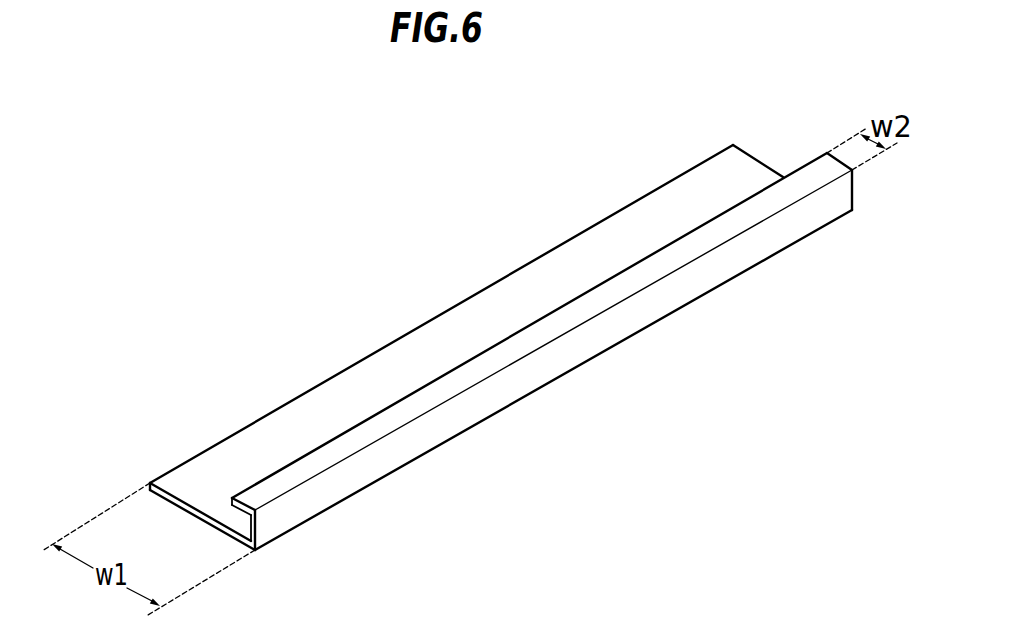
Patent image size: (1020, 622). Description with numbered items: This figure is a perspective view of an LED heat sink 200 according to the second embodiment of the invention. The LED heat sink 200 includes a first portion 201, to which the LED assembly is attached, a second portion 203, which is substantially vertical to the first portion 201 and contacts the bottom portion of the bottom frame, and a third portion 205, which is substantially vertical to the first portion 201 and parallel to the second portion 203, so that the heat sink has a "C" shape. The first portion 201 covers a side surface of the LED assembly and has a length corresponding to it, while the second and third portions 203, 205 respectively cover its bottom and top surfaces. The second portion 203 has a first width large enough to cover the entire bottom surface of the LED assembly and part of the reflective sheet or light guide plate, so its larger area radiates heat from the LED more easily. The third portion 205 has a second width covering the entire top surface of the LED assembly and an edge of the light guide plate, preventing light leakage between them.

The LED heat sink 200 is at (493, 325).
The first portion 201 is at (297, 507).
The second portion 203 is at (207, 498).
The third portion 205 is at (278, 485).